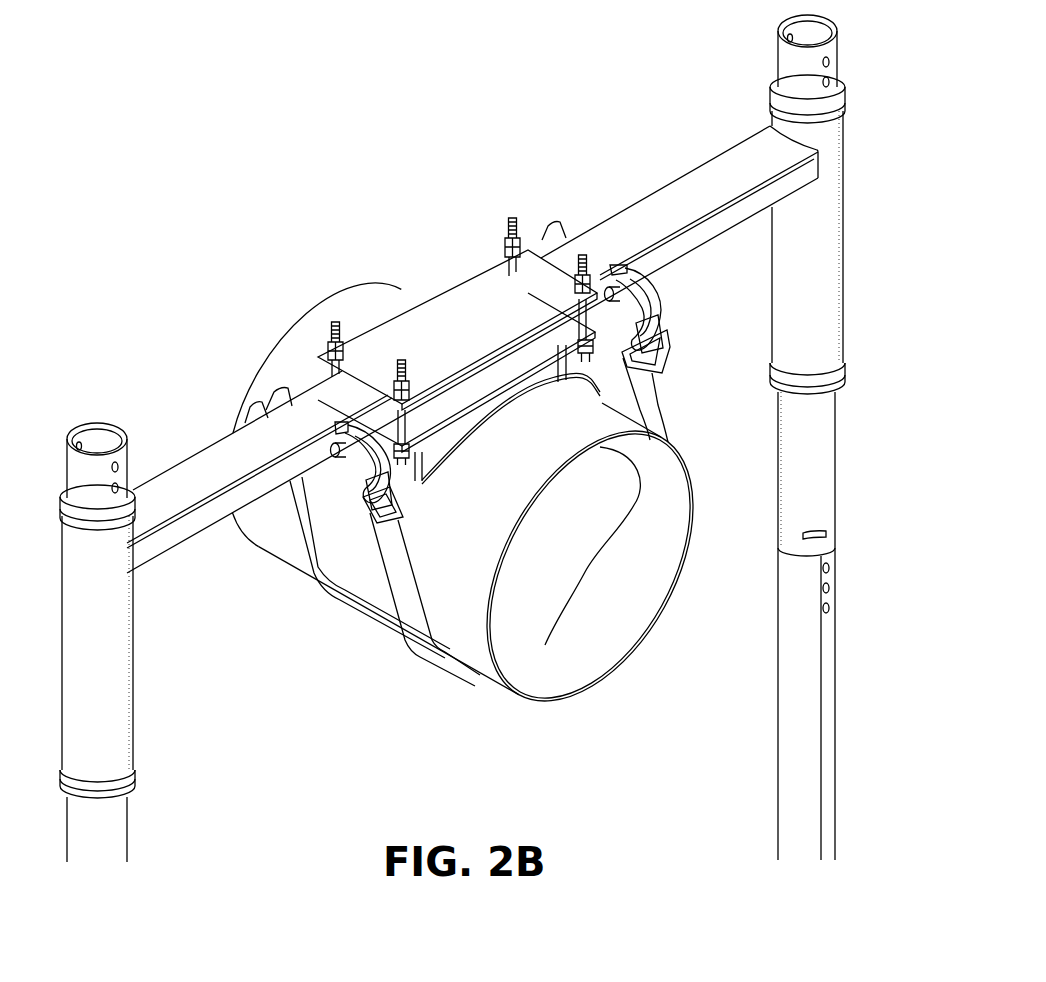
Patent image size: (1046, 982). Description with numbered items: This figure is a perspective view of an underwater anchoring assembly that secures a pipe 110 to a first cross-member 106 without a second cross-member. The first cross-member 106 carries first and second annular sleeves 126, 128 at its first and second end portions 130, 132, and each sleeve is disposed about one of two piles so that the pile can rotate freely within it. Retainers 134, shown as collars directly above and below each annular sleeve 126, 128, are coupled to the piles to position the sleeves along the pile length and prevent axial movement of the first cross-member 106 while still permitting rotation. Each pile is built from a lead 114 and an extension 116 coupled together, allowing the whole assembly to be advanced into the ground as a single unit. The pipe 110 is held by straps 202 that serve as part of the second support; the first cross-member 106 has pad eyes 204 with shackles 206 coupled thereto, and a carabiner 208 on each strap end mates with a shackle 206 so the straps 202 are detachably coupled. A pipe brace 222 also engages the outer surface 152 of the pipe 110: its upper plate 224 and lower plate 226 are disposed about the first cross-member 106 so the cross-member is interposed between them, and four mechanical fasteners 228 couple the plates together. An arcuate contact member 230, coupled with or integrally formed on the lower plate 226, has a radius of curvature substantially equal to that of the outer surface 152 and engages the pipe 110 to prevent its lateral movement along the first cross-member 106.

The first cross-member 106 is at (635, 195).
The pipe 110 is at (483, 490).
The lead 114 is at (820, 722).
The extension 116 is at (124, 822).
The first annular sleeve 126 is at (820, 232).
The second annular sleeve 128 is at (82, 656).
The first end portion 130 is at (778, 437).
The second end portion 132 is at (461, 460).
The retainer 134 is at (62, 500).
The outer surface of the pipe 152 is at (318, 352).
The strap 202 is at (290, 565).
The pad eye 204 is at (548, 235).
The shackle 206 is at (352, 478).
The carabiner 208 is at (398, 488).
The pipe brace 222 is at (468, 413).
The upper plate 224 is at (470, 303).
The lower plate 226 is at (524, 345).
The mechanical fastener 228 is at (507, 226).
The arcuate contact member 230 is at (475, 400).